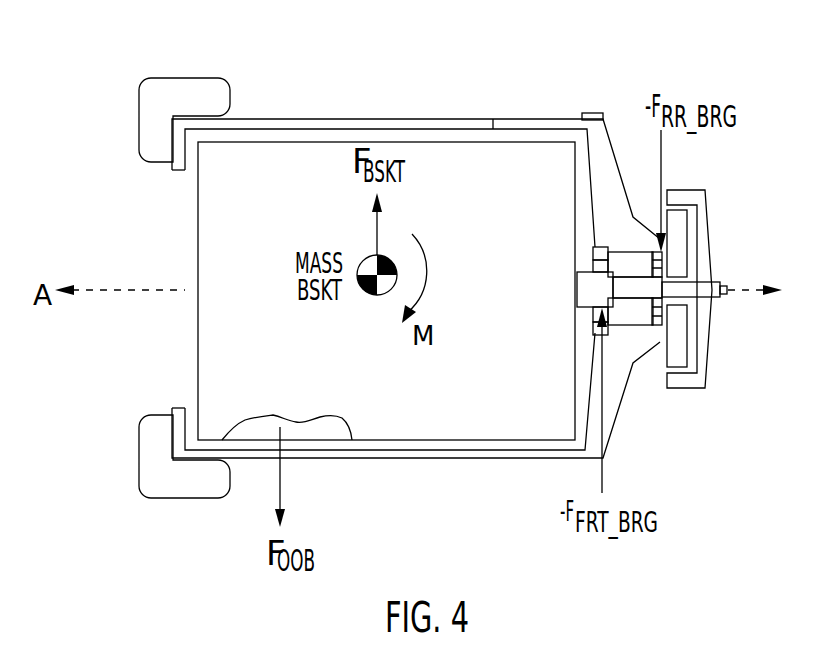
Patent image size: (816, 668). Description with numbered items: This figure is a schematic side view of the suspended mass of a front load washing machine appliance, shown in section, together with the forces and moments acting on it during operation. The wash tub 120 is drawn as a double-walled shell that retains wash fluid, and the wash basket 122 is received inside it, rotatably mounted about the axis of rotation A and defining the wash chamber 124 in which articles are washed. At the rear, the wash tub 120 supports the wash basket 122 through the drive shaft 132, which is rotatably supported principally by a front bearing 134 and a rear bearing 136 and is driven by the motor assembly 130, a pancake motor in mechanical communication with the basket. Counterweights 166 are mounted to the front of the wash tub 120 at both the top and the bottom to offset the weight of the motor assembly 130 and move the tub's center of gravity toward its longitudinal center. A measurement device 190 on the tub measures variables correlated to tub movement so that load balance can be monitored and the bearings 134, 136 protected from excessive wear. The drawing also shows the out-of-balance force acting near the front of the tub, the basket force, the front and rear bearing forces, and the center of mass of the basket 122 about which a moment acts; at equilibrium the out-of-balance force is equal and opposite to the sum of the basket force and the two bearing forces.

The wash tub 120 is at (447, 120).
The wash basket 122 is at (288, 142).
The wash chamber 124 is at (287, 202).
The motor assembly 130 is at (722, 232).
The drive shaft 132 is at (625, 280).
The front bearing 134 is at (601, 247).
The rear bearing 136 is at (643, 327).
The counterweight 166 is at (197, 96).
The measurement device 190 is at (587, 113).